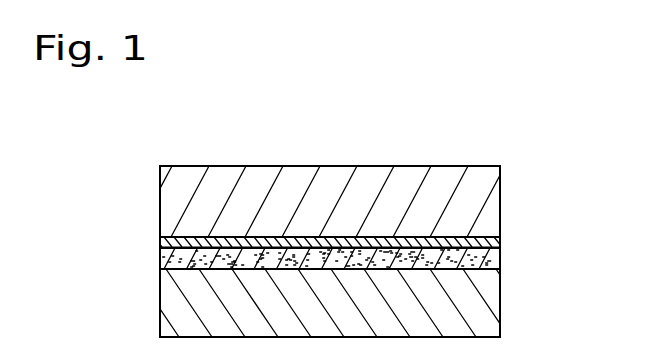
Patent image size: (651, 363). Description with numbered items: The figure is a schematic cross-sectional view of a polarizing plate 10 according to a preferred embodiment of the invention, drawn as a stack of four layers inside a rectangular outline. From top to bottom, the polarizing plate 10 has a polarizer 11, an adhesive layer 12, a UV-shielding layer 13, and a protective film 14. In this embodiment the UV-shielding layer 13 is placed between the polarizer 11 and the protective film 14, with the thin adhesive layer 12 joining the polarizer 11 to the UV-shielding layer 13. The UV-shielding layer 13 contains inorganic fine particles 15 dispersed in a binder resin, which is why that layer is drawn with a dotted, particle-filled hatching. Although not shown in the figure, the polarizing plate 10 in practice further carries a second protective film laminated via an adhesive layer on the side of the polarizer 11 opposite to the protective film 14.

The polarizing plate 10 is at (523, 135).
The polarizer 11 is at (478, 208).
The adhesive layer 12 is at (493, 242).
The UV-shielding layer 13 is at (490, 258).
The protective film 14 is at (487, 300).
The inorganic fine particles 15 is at (207, 250).